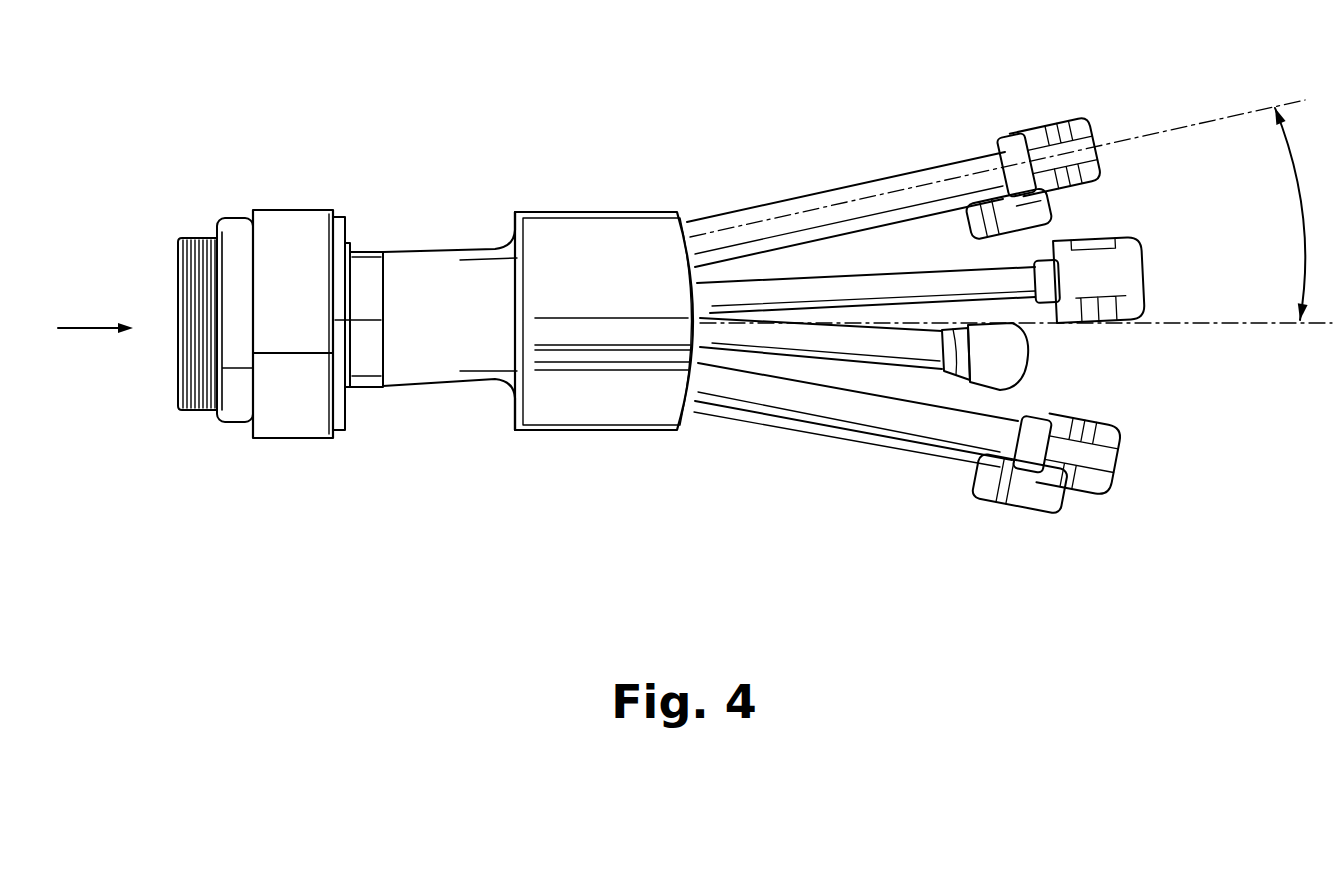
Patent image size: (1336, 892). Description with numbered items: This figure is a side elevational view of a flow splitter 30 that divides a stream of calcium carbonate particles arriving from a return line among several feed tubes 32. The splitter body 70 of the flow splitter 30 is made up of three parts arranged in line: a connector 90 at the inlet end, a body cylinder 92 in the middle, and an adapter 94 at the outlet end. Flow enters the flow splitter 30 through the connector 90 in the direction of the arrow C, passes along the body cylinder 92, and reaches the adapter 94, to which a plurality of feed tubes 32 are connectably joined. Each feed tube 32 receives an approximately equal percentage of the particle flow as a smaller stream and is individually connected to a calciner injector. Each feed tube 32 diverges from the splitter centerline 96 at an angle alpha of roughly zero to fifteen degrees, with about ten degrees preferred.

The flow splitter 30 is at (622, 110).
The feed tube 32 is at (863, 285).
The splitter body 70 is at (698, 467).
The connector 90 is at (285, 236).
The body cylinder 92 is at (405, 268).
The adapter 94 is at (535, 226).
The splitter centerline 96 is at (1225, 325).